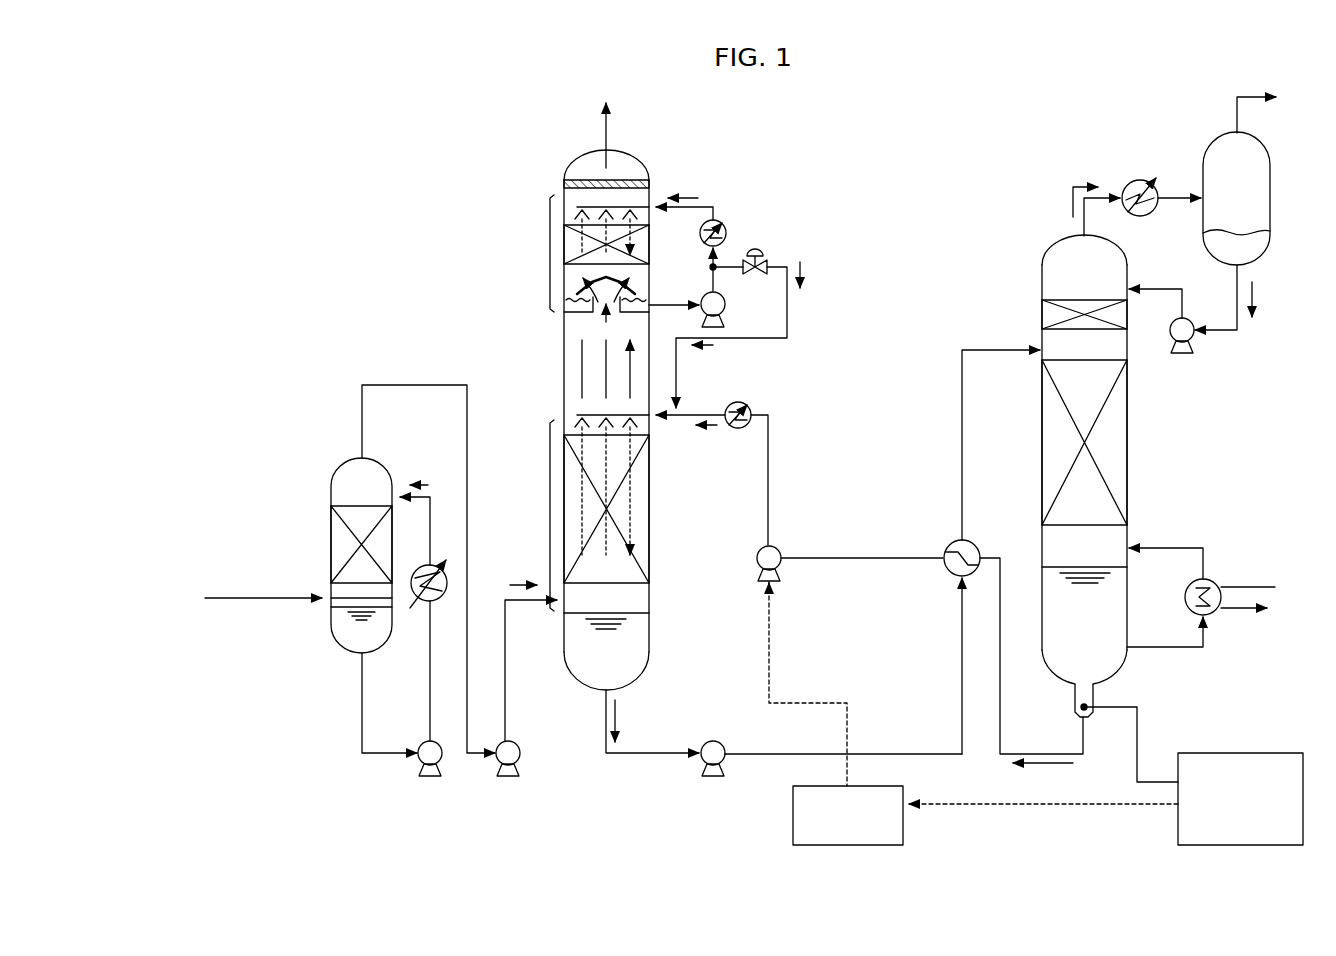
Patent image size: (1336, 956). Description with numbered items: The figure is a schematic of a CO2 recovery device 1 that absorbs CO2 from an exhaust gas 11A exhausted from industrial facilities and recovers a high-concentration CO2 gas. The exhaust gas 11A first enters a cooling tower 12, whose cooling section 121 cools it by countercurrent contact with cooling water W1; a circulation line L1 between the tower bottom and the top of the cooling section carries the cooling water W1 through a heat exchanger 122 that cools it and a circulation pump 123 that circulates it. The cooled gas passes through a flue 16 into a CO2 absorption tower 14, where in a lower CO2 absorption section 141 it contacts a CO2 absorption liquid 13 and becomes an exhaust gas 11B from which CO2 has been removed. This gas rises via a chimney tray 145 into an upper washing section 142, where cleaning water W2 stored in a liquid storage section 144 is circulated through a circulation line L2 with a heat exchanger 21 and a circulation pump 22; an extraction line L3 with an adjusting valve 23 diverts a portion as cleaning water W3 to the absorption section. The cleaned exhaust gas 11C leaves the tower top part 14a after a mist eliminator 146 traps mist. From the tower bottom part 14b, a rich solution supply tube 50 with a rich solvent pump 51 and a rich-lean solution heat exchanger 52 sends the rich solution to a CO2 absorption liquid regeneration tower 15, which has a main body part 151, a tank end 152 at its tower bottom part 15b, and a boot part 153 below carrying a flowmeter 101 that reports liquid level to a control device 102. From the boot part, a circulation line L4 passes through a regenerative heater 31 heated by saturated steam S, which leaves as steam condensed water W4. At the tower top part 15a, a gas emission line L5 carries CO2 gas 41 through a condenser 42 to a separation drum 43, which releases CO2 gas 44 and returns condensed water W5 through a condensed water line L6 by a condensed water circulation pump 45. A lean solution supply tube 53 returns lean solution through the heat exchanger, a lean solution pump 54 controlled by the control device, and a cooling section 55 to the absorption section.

The CO2 recovery device 1 is at (918, 116).
The exhaust gas 11A is at (290, 596).
The exhaust gas from which CO2 has been removed 11B is at (590, 316).
The exhaust gas 11C is at (600, 126).
The cooling tower 12 is at (327, 534).
The cooling section 121 is at (331, 520).
The heat exchanger 122 is at (422, 605).
The circulation pump 123 is at (420, 742).
The CO2 absorption liquid 13 is at (712, 428).
The CO2 absorption tower 14 is at (574, 386).
The tower top part 14a is at (612, 152).
The tower bottom part 14b is at (642, 670).
The CO2 absorption section 141 is at (548, 518).
The washing section 142 is at (548, 240).
The liquid storage section 144 is at (636, 305).
The chimney tray 145 is at (580, 272).
The mist eliminator 146 is at (585, 182).
The CO2 absorption liquid regeneration tower 15 is at (1120, 478).
The tower top part 15a is at (1048, 244).
The tower bottom part 15b is at (1140, 683).
The main body part 151 is at (1127, 476).
The tank end 152 is at (1113, 680).
The boot part 153 is at (1072, 708).
The flue 16 is at (503, 640).
The heat exchanger 21 is at (722, 228).
The circulation pump 22 is at (726, 300).
The adjusting valve 23 is at (754, 252).
The regenerative heater 31 is at (1208, 578).
The CO2 gas 41 is at (1080, 186).
The condenser 42 is at (1140, 180).
The separation drum 43 is at (1272, 198).
The CO2 gas 44 is at (1245, 94).
The condensed water circulation pump 45 is at (1186, 318).
The rich solution supply tube 50 is at (668, 757).
The rich solvent pump 51 is at (710, 740).
The rich-lean solution heat exchanger 52 is at (944, 580).
The lean solution supply tube 53 is at (998, 748).
The lean solution pump 54 is at (778, 552).
The cooling section 55 is at (750, 410).
The flowmeter 101 is at (1222, 752).
The control device 102 is at (866, 786).
The circulation line L1 is at (360, 748).
The circulation line L2 is at (716, 205).
The extraction line L3 is at (786, 268).
The circulation line L4 is at (1162, 546).
The gas emission line L5 is at (1180, 195).
The condensed water line L6 is at (1220, 335).
The cooling water W1 is at (422, 482).
The cleaning water W2 is at (685, 194).
The cleaning water W3 is at (805, 268).
The steam condensed water W4 is at (1245, 612).
The condensed water W5 is at (1257, 296).
The saturated steam S is at (1238, 585).